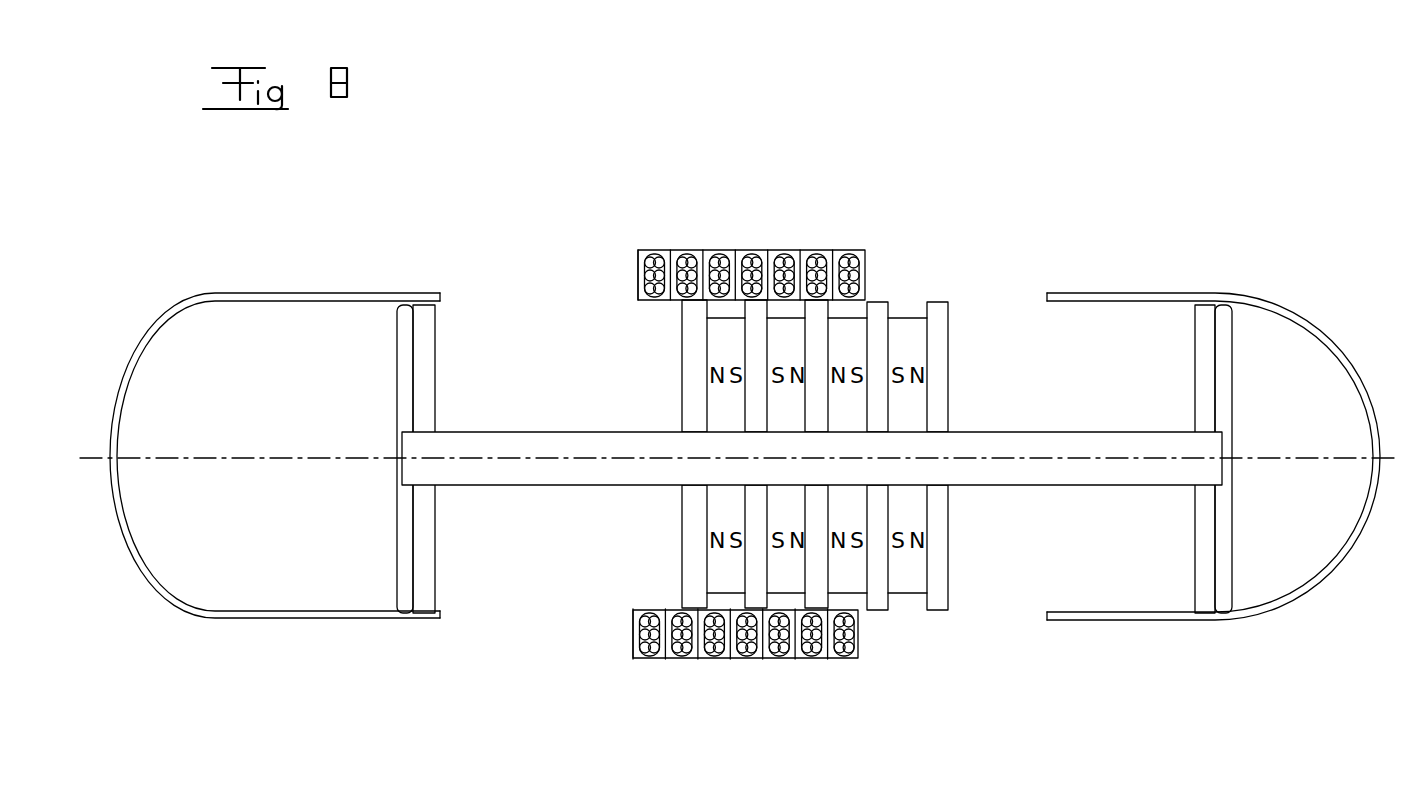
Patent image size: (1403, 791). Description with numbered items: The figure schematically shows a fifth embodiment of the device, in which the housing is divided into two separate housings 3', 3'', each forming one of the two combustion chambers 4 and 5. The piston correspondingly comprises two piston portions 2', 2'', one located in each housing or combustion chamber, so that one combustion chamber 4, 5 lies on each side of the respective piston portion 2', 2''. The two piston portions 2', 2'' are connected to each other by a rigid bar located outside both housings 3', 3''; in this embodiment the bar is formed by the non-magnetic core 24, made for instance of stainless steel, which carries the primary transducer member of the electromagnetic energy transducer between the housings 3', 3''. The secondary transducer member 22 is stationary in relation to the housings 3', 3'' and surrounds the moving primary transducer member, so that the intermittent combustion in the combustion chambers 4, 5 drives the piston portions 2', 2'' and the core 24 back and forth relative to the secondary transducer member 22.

The combustion chamber 5 is at (275, 490).
The combustion chamber 4 is at (1213, 433).
The housing 3' is at (1213, 433).
The housing 3'' is at (275, 490).
The piston portion 2' is at (1184, 459).
The piston portion 2'' is at (457, 459).
The secondary transducer member 22 is at (657, 663).
The non-magnetic core 24 is at (1020, 443).